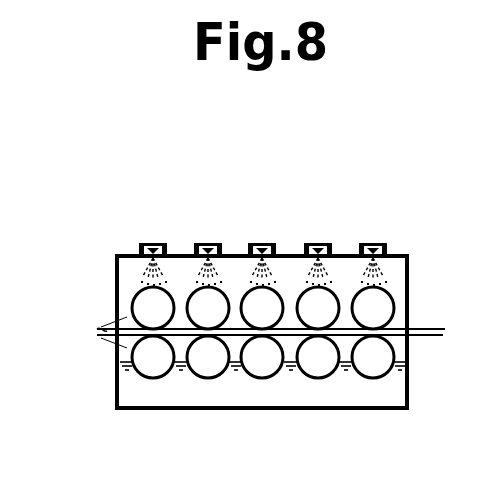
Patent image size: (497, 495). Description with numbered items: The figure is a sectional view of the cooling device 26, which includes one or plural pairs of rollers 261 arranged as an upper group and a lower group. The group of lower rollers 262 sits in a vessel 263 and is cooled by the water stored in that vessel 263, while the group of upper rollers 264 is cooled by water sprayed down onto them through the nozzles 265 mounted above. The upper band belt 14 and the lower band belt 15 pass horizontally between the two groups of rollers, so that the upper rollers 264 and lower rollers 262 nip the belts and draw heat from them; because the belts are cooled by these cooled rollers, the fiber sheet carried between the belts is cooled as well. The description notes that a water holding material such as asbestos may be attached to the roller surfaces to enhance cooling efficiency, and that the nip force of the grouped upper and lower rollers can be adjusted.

The cooling device 26 is at (418, 240).
The upper band belt 14 is at (437, 329).
The lower band belt 15 is at (440, 336).
The pairs of rollers 261 is at (127, 348).
The lower rollers 262 is at (262, 378).
The vessel 263 is at (372, 392).
The upper rollers 264 is at (215, 298).
The nozzles 265 is at (153, 243).